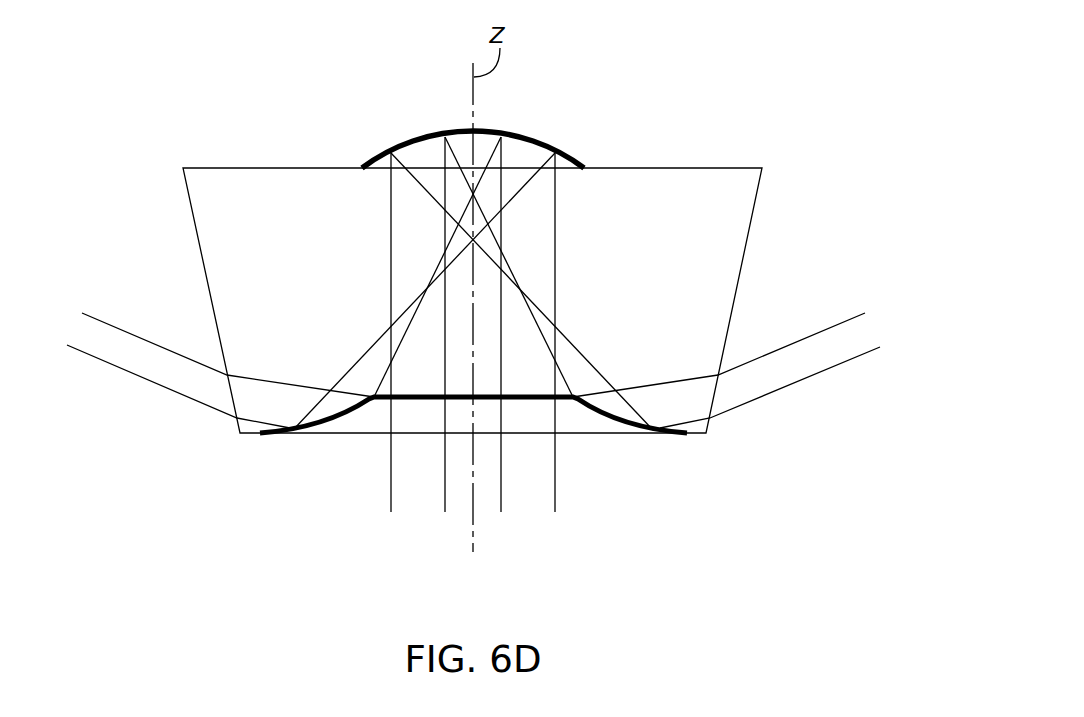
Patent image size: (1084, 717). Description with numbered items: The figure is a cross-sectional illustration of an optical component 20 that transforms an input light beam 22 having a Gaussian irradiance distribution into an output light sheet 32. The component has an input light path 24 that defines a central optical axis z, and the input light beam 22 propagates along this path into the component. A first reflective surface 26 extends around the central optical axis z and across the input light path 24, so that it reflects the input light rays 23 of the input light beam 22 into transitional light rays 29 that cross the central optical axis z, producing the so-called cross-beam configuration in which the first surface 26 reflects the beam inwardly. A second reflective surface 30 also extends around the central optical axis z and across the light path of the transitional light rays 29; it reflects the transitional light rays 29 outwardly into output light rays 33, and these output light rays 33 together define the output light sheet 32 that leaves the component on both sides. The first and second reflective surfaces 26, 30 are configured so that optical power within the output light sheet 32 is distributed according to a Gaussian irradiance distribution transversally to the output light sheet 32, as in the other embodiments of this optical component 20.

The optical component 20 is at (804, 130).
The input light beam 22 is at (507, 376).
The input light rays 23 is at (553, 485).
The input light path 24 is at (520, 528).
The first reflective surface 26 is at (428, 141).
The transitional light rays 29 is at (430, 195).
The second reflective surface 30 is at (335, 420).
The output light sheet 32 is at (753, 350).
The output light rays 33 is at (818, 332).